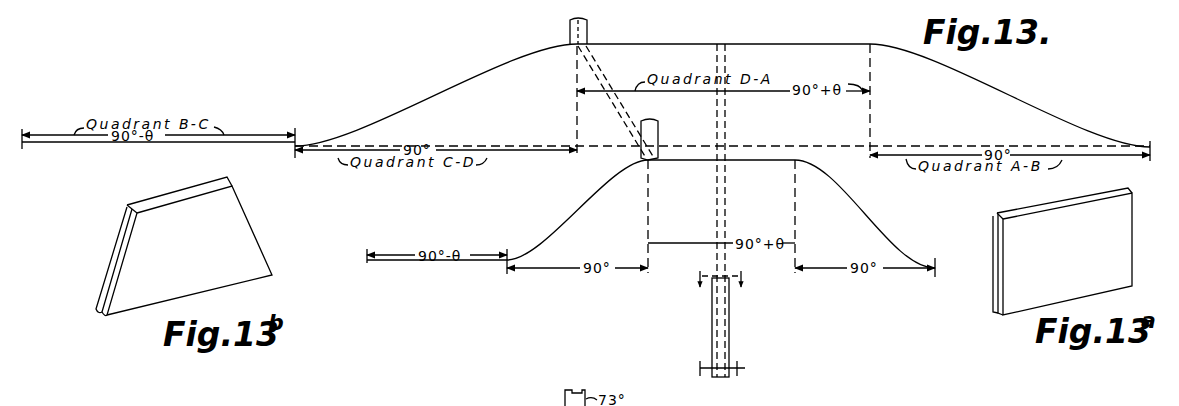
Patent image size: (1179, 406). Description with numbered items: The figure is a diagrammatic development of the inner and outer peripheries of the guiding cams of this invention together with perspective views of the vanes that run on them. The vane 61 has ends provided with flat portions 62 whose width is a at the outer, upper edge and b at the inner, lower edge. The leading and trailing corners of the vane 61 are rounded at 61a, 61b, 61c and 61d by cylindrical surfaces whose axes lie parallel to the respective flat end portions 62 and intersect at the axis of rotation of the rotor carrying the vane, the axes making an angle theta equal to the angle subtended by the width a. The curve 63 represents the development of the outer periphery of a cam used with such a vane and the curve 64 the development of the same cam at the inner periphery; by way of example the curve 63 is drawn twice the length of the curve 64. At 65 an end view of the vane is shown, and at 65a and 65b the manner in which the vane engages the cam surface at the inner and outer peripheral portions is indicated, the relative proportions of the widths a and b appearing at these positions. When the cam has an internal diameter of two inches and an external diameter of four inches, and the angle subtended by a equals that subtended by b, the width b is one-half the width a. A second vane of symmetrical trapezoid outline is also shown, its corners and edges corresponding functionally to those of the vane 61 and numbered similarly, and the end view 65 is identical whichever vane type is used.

In FIG. 13b, the vane 61 is at (189, 246).
In FIG. 13a, the vane 61 is at (1064, 251).
In FIG. 13b, the rounded corner 61a is at (238, 193).
In FIG. 13a, the rounded corner 61a is at (1134, 194).
In FIG. 13b, the rounded corner 61b is at (98, 300).
In FIG. 13a, the rounded corner 61b is at (992, 312).
In FIG. 13b, the rounded corner 61c is at (230, 183).
In FIG. 13a, the rounded corner 61c is at (1130, 191).
In FIG. 13b, the rounded corner 61d is at (142, 207).
In FIG. 13a, the rounded corner 61d is at (1003, 222).
In FIG. 13b, the flat end portion 62 is at (113, 256).
In FIG. 13a, the flat end portion 62 is at (994, 265).
In FIG. 13, the outer periphery cam curve 63 is at (990, 82).
In FIG. 13, the inner periphery cam curve 64 is at (862, 206).
In FIG. 13, the vane end view 65 is at (729, 325).
In FIG. 13, the vane engagement position 65a is at (588, 24).
In FIG. 13, the vane engagement position 65b is at (659, 128).
In FIG. 13, the outer edge width a is at (588, 38).
In FIG. 13b, the outer edge width a is at (138, 221).
In FIG. 13a, the outer edge width a is at (1003, 228).
In FIG. 13, the inner edge width b is at (656, 158).
In FIG. 13b, the inner edge width b is at (105, 317).
In FIG. 13a, the inner edge width b is at (996, 315).